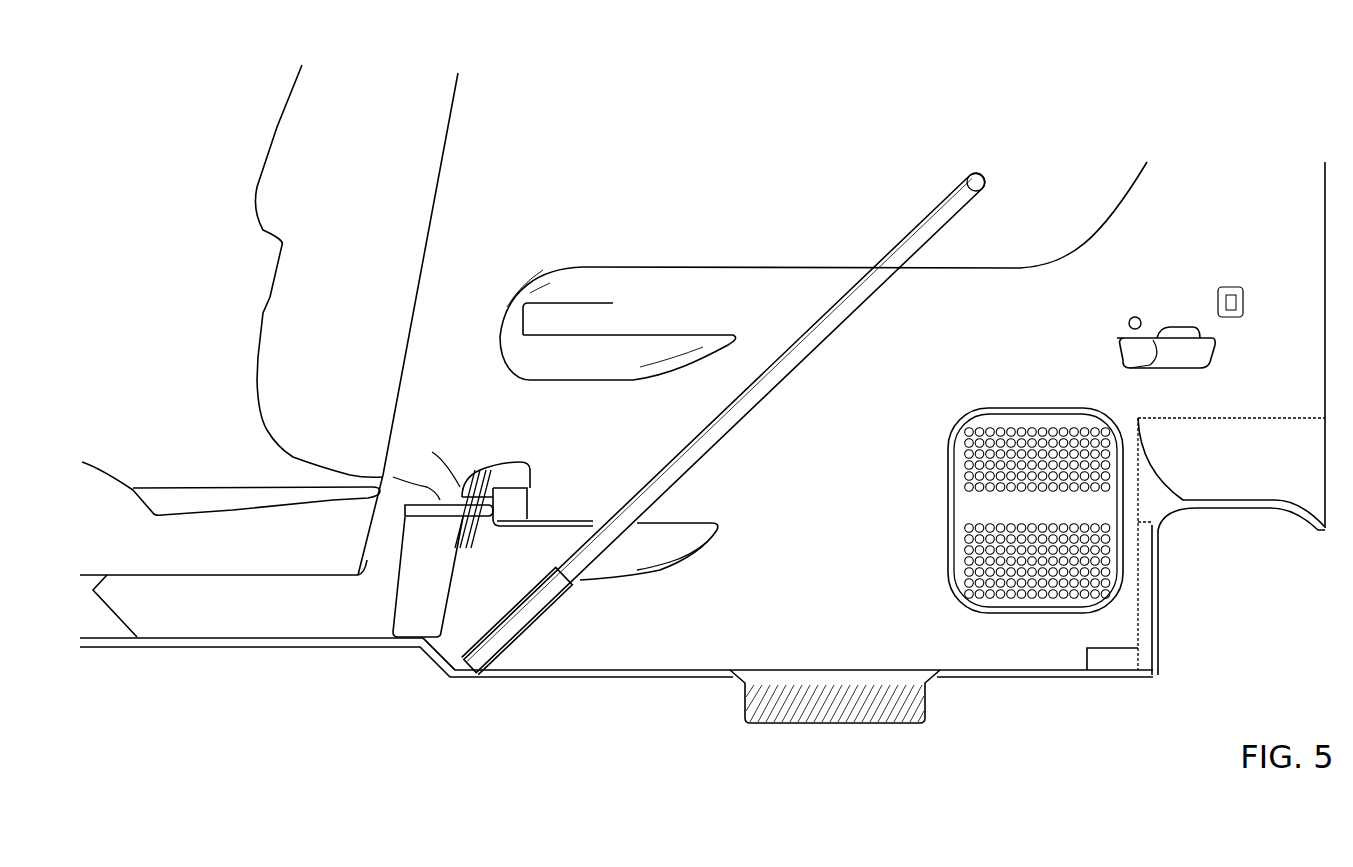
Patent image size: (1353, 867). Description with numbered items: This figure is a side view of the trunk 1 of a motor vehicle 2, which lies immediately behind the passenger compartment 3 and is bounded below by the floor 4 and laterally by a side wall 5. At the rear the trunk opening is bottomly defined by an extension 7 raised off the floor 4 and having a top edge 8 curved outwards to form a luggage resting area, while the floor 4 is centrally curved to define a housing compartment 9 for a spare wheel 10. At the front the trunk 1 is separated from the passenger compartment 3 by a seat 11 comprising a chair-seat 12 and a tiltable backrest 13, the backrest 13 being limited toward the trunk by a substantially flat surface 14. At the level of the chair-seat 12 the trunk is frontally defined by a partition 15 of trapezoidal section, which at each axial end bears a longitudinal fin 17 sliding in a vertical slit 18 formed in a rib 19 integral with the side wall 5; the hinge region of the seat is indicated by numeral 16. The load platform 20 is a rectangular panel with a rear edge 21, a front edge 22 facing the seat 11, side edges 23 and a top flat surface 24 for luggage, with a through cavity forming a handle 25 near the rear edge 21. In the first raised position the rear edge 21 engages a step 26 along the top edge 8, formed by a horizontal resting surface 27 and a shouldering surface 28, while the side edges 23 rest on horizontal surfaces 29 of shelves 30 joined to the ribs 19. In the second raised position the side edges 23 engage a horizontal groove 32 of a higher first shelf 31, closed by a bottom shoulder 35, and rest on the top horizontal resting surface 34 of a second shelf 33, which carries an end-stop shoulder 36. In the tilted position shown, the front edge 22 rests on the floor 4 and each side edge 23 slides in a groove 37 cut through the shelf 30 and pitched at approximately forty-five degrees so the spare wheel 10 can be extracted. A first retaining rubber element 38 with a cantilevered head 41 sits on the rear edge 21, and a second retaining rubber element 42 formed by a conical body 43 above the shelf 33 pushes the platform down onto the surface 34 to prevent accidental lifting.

The trunk 1 is at (775, 156).
The motor vehicle 2 is at (185, 657).
The passenger compartment 3 is at (136, 263).
The floor 4 is at (640, 668).
The side wall 5 is at (1092, 200).
The extension 7 is at (1163, 603).
The top edge 8 is at (1233, 507).
The housing compartment 9 is at (753, 677).
The spare wheel 10 is at (877, 710).
The seat 11 is at (247, 350).
The chair-seat 12 is at (213, 535).
The backrest 13 is at (298, 157).
The surface 14 is at (448, 174).
The partition 15 is at (405, 613).
The hinge 16 is at (409, 495).
The longitudinal fin 17 is at (462, 560).
The slit 18 is at (455, 470).
The rib 19 is at (440, 500).
The load platform 20 is at (838, 337).
The rear edge 21 is at (967, 178).
The front edge 22 is at (457, 672).
The side edge 23 is at (719, 446).
The top flat surface 24 is at (799, 331).
The handle 25 is at (919, 244).
The step 26 is at (1152, 479).
The horizontal resting surface 27 is at (1163, 505).
The shouldering surface 28 is at (1183, 501).
The horizontal surface 29 is at (680, 517).
The shelf 30 is at (650, 552).
The first shelf 31 is at (562, 360).
The horizontal groove 32 is at (672, 323).
The second shelf 33 is at (1210, 362).
The top horizontal resting surface 34 is at (1148, 329).
The bottom shoulder 35 is at (528, 320).
The end-stop shoulder 36 is at (1183, 322).
The groove 37 is at (567, 560).
The first retaining rubber element 38 is at (982, 201).
The head 41 is at (990, 181).
The second retaining rubber element 42 is at (1133, 311).
The conical body 43 is at (1125, 320).